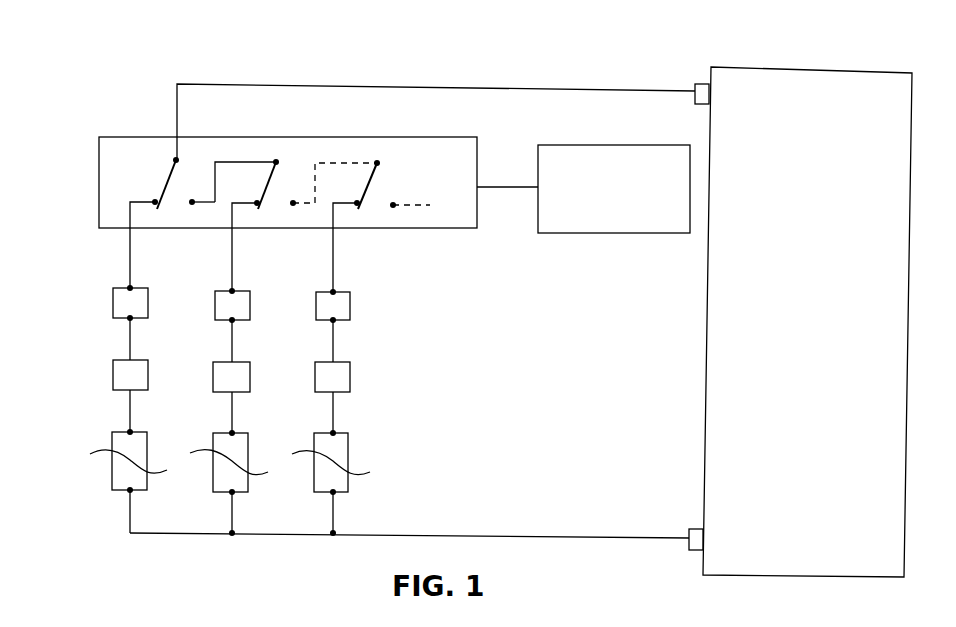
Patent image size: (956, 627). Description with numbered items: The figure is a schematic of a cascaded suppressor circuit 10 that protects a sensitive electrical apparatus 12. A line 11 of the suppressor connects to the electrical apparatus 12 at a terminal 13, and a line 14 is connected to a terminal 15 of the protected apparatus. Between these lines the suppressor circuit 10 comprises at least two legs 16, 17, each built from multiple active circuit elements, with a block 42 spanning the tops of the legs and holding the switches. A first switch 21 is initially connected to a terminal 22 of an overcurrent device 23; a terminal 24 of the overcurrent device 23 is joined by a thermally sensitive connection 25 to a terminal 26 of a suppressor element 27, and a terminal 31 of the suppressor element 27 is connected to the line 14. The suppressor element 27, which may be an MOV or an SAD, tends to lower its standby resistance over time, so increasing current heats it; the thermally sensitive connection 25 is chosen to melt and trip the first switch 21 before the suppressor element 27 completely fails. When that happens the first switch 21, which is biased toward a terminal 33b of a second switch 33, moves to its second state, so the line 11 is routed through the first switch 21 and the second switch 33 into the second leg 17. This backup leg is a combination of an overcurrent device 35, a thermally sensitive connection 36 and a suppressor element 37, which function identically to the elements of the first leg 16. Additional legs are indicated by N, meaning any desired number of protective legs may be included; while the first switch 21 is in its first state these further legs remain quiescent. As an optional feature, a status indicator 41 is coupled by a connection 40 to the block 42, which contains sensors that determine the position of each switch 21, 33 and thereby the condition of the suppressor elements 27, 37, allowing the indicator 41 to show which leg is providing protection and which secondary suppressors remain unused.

The cascaded suppressor circuit 10 is at (136, 46).
The line 11 is at (450, 90).
The electrical apparatus 12 is at (783, 67).
The terminal 13 is at (698, 83).
The line 14 is at (575, 539).
The terminal 15 is at (690, 528).
The first leg 16 is at (105, 262).
The second leg 17 is at (255, 272).
The first switch 21 is at (172, 182).
The terminal 22 is at (133, 287).
The overcurrent device 23 is at (113, 302).
The terminal 24 is at (133, 320).
The thermally sensitive connection 25 is at (113, 375).
The terminal 26 is at (128, 431).
The suppressor element 27 is at (112, 475).
The terminal 31 is at (128, 492).
The second switch 33 is at (270, 185).
The terminal 33b is at (194, 205).
The overcurrent device 35 is at (250, 303).
The thermally sensitive connection 36 is at (250, 377).
The suppressor element 37 is at (210, 477).
The connection 40 is at (505, 190).
The status indicator 41 is at (583, 235).
The block 42 is at (122, 137).
The additional legs N is at (362, 273).